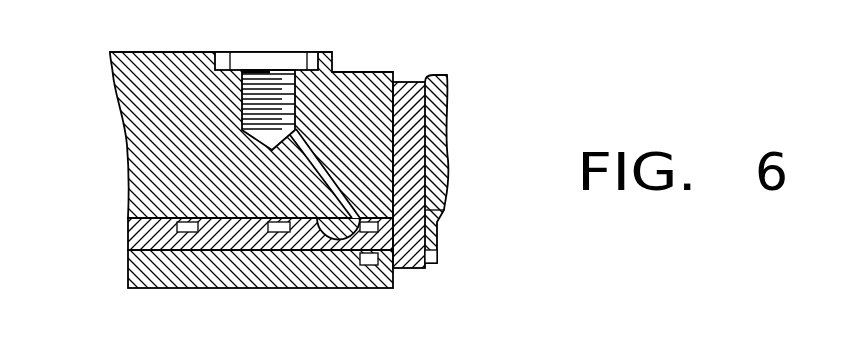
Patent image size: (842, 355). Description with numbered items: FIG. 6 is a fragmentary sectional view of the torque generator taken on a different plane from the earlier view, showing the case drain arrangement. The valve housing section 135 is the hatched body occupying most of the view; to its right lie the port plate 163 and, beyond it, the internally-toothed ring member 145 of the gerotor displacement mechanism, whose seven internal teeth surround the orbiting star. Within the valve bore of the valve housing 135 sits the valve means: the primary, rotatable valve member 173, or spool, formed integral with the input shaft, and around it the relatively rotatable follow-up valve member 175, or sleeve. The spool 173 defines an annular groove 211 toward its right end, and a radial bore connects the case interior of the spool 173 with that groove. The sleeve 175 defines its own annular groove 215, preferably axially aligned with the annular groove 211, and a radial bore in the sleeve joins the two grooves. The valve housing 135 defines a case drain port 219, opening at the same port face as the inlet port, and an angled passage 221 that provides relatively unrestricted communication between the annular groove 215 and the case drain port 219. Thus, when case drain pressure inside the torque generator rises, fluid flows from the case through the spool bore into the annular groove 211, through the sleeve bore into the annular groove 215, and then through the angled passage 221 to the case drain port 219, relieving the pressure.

The valve housing section 135 is at (140, 127).
The case drain port 219 is at (289, 80).
The angled passage 221 is at (320, 164).
The annular groove 215 is at (318, 220).
The follow-up valve member 175 is at (140, 230).
The primary, rotatable valve member 173 is at (150, 264).
The annular groove 211 is at (362, 263).
The port plate 163 is at (410, 103).
The internally-toothed ring member 145 is at (433, 133).